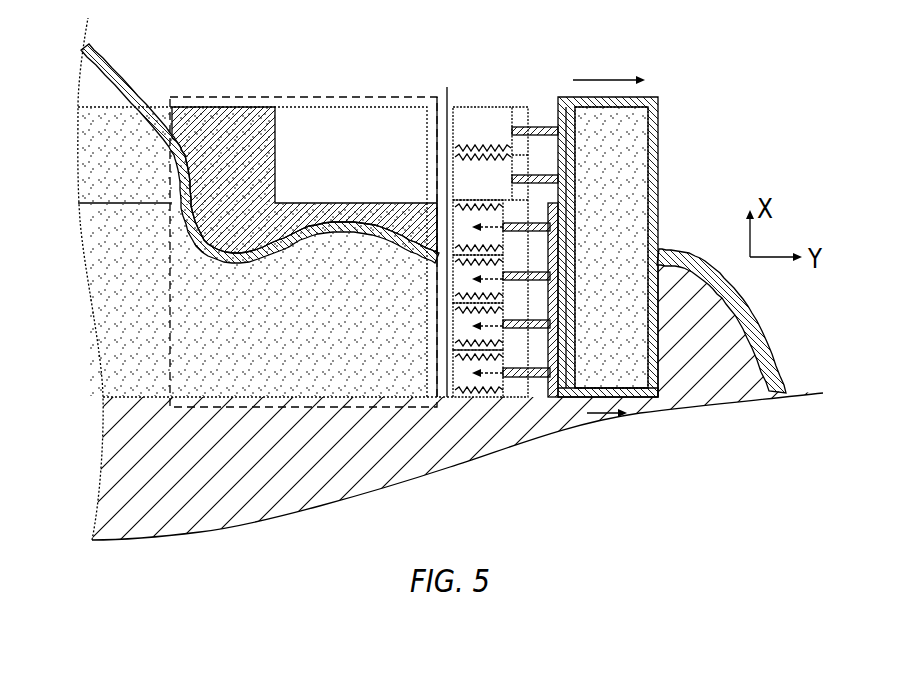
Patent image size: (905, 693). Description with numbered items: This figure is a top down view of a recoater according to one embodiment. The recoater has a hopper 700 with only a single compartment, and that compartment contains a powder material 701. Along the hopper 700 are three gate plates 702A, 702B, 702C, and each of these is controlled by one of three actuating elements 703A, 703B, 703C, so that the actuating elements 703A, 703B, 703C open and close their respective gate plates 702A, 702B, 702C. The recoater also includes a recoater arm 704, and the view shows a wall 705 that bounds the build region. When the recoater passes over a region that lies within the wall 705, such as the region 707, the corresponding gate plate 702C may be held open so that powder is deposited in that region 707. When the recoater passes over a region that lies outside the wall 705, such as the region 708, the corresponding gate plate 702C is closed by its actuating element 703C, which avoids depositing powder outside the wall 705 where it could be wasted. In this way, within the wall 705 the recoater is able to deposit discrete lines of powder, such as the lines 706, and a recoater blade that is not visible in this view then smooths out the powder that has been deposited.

The hopper 700 is at (676, 101).
The powder material 701 is at (650, 153).
The gate plate 702A is at (552, 398).
The gate plate 702B is at (557, 205).
The gate plate 702C is at (558, 105).
The actuating element 703A is at (477, 398).
The actuating element 703B is at (447, 106).
The actuating element 703C is at (472, 106).
The recoater arm 704 is at (442, 398).
The wall 705 is at (121, 72).
The discrete lines of powder 706 is at (190, 320).
The region within the wall 707 is at (102, 153).
The region outside the wall 708 is at (257, 107).